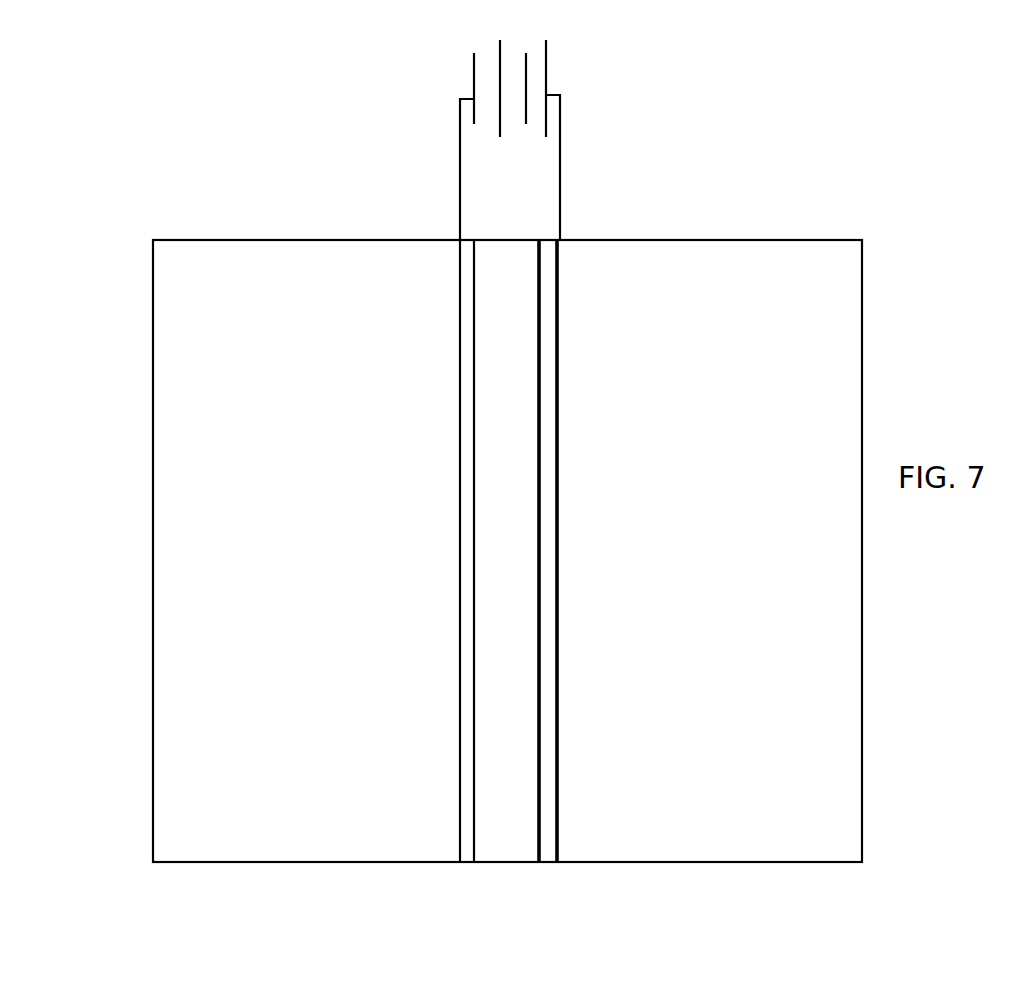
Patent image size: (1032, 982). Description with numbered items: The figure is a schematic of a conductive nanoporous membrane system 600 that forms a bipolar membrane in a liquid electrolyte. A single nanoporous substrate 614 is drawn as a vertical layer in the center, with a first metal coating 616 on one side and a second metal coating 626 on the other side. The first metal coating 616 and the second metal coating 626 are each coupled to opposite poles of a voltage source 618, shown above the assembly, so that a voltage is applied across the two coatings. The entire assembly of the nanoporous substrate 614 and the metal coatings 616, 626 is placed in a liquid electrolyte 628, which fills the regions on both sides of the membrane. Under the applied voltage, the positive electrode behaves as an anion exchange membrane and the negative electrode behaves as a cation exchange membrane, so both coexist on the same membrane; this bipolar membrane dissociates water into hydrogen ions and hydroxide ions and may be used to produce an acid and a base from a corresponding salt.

The conductive nanoporous membrane system 600 is at (170, 143).
The nanoporous substrate 614 is at (506, 862).
The first metal coating 616 is at (461, 675).
The voltage source 618 is at (546, 73).
The second metal coating 626 is at (550, 600).
The liquid electrolyte 628 is at (340, 502).